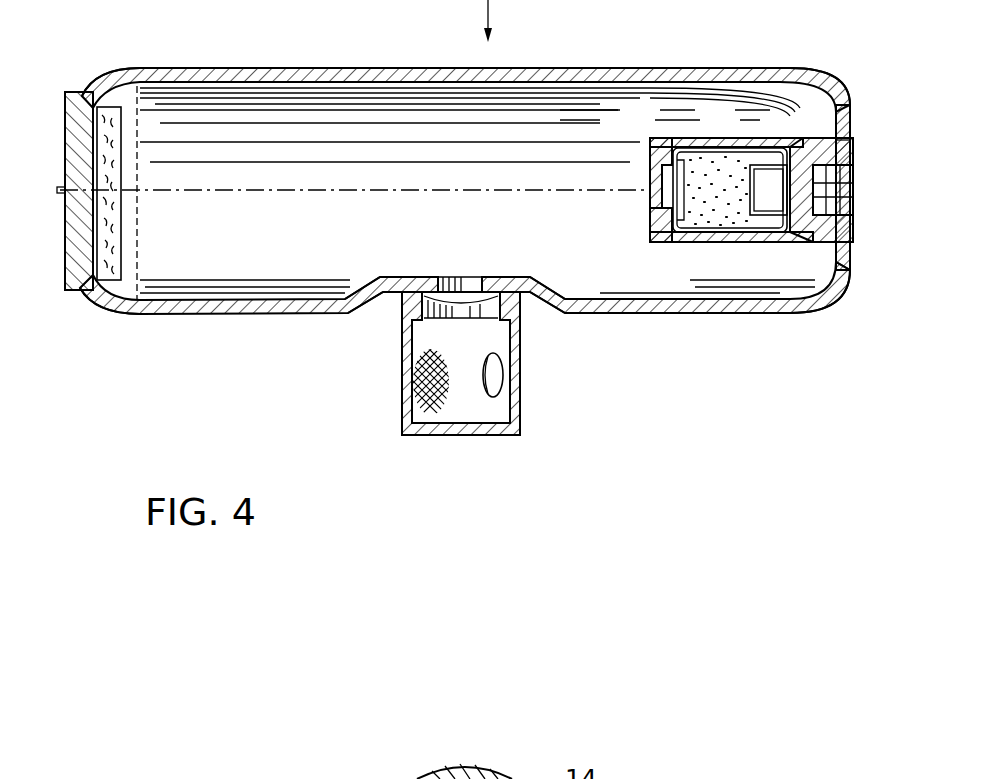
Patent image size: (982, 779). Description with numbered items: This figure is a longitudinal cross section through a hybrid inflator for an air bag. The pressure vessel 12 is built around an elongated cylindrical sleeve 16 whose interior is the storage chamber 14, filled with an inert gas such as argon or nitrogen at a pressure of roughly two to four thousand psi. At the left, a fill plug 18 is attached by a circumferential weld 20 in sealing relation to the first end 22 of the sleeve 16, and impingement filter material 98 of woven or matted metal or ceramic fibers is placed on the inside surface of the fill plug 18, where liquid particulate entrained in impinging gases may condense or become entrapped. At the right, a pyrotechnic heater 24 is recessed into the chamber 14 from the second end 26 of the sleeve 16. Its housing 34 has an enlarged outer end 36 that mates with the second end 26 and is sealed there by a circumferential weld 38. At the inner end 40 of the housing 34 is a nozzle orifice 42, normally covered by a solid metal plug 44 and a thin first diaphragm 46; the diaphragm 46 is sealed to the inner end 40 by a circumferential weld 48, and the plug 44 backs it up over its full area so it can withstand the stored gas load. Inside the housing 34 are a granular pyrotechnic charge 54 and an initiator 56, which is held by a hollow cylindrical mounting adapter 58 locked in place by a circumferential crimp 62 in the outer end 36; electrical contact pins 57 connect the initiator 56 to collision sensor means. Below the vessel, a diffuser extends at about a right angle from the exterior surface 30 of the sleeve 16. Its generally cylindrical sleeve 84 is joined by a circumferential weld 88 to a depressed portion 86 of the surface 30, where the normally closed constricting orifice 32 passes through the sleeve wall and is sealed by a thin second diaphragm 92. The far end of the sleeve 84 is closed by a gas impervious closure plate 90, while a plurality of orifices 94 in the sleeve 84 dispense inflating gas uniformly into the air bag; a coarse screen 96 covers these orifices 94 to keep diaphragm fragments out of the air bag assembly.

The pressure vessel 12 is at (645, 70).
The storage chamber 14 is at (424, 96).
The cylindrical sleeve 16 is at (320, 68).
The fill plug 18 is at (70, 118).
The circumferential weld 20 is at (74, 293).
The first end 22 is at (100, 76).
The pyrotechnic heater 24 is at (731, 192).
The second end 26 is at (812, 75).
The exterior surface 30 is at (197, 318).
The constricting orifice 32 is at (474, 282).
The housing 34 is at (760, 136).
The enlarged outer end 36 is at (855, 96).
The circumferential weld 38 is at (833, 300).
The inner end 40 is at (658, 142).
The nozzle orifice 42 is at (650, 197).
The solid metal plug 44 is at (648, 175).
The first diaphragm 46 is at (648, 218).
The circumferential weld 48 is at (650, 240).
The pyrotechnic charge 54 is at (723, 210).
The initiator 56 is at (770, 198).
The electrical contact pins 57 is at (842, 196).
The mounting adapter 58 is at (848, 272).
The circumferential crimp 62 is at (850, 146).
The cylindrical sleeve 84 is at (406, 398).
The depressed portion 86 is at (373, 302).
The circumferential weld 88 is at (522, 297).
The closure plate 90 is at (478, 437).
The second diaphragm 92 is at (443, 318).
The diffuser orifices 94 is at (498, 382).
The coarse screen 96 is at (437, 410).
The impingement filter material 98 is at (117, 245).